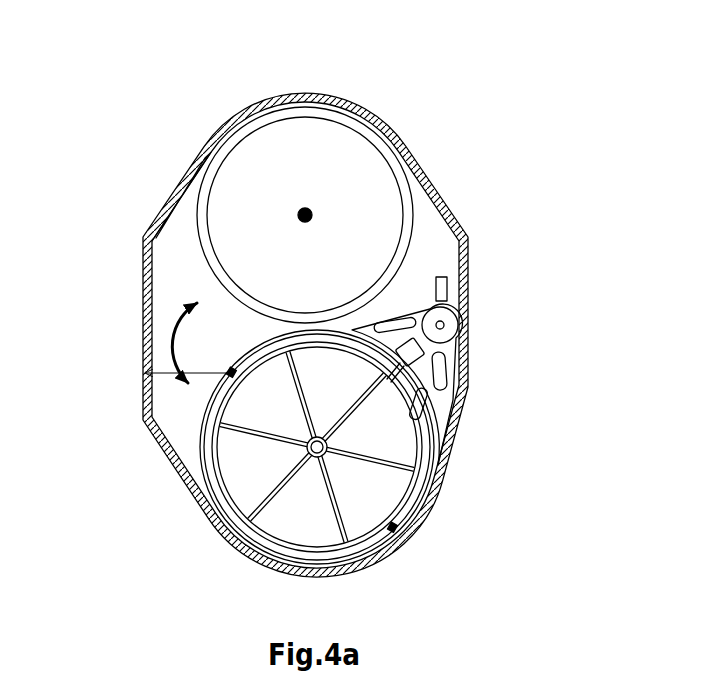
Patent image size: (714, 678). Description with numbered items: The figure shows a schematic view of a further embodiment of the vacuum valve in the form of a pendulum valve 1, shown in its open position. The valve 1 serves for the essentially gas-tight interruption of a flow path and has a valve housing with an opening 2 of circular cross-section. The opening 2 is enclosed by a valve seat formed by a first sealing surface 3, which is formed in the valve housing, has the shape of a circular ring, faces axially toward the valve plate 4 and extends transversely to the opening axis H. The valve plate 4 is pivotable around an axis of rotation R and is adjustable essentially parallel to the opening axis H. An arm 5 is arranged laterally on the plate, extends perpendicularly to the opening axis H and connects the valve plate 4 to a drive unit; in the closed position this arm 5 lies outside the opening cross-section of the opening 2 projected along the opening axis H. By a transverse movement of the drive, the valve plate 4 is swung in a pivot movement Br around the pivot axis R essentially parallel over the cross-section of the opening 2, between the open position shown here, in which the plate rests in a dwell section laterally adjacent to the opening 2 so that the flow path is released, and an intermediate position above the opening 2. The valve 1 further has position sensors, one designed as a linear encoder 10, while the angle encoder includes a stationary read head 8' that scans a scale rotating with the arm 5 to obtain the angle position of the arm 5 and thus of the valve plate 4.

The pendulum valve 1 is at (367, 297).
The opening 2 is at (337, 215).
The first sealing surface 3 is at (305, 333).
The valve plate 4 is at (272, 447).
The arm 5 is at (463, 384).
The read head 8' is at (509, 287).
The linear encoder 10 is at (372, 333).
The opening axis H is at (305, 215).
The axis of rotation R is at (494, 334).
The pivot movement Br is at (132, 341).